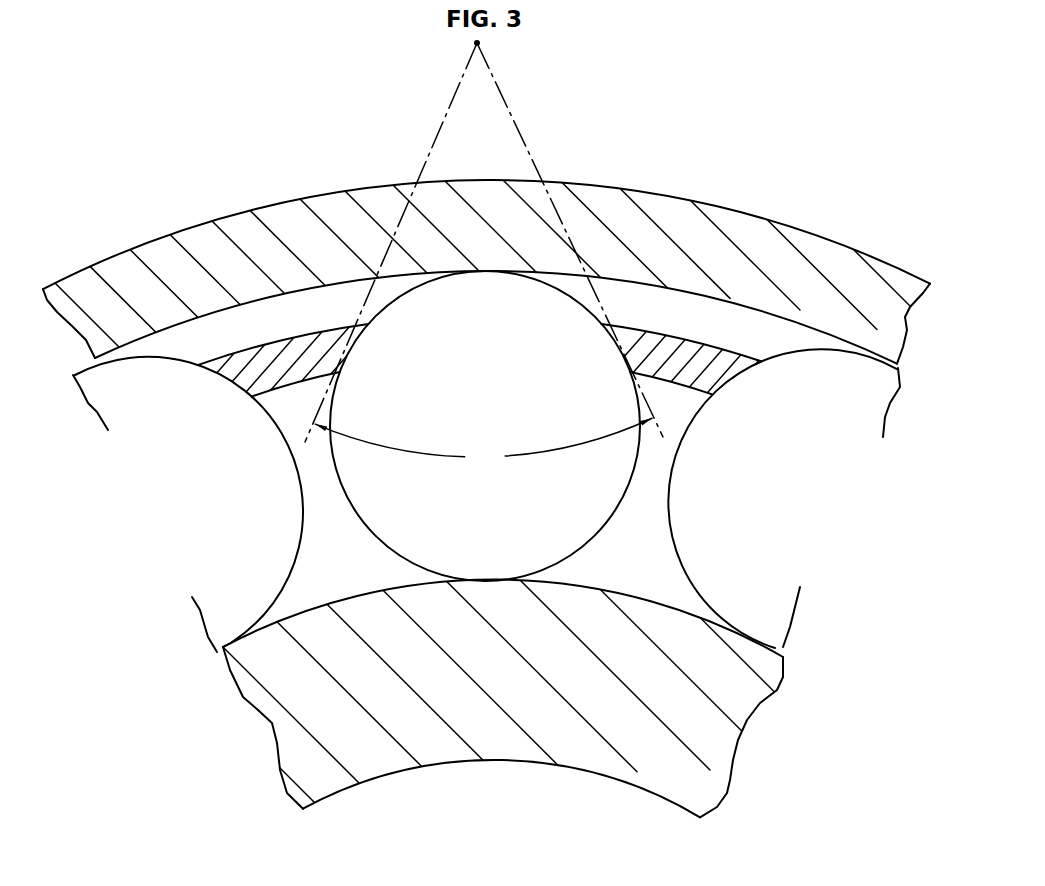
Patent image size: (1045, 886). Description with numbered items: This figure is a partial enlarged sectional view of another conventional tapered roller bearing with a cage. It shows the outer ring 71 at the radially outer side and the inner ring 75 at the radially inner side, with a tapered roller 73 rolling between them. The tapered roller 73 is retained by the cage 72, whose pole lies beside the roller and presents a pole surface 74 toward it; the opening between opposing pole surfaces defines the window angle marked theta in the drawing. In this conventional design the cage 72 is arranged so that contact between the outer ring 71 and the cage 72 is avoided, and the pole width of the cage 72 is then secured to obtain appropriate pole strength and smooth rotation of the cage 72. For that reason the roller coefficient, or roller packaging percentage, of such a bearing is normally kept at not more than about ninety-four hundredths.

The outer ring 71 is at (745, 235).
The cage 72 is at (292, 357).
The tapered roller 73 is at (548, 302).
The pole surface 74 is at (618, 350).
The inner ring 75 is at (713, 735).